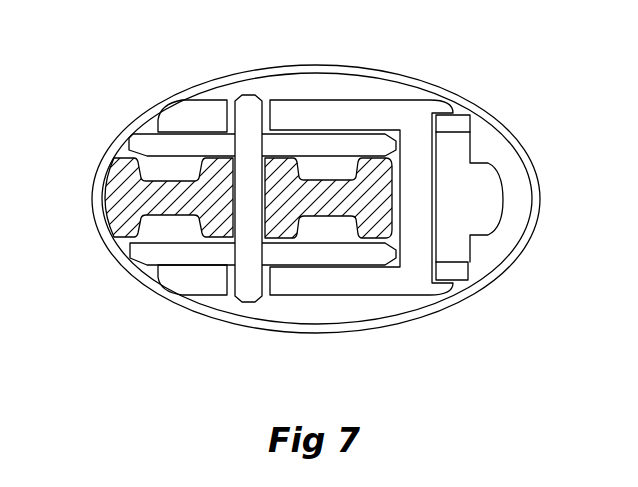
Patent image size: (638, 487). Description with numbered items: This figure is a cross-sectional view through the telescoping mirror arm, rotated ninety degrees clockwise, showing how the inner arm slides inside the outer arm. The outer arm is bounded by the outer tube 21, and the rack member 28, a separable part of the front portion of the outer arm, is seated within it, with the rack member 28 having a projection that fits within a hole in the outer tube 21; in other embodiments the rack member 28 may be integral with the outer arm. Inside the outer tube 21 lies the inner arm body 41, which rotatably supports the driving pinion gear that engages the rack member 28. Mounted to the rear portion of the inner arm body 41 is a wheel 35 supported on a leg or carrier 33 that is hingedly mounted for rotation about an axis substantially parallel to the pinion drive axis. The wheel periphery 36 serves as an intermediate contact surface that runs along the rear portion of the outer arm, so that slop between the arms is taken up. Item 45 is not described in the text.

The outer tube 21 is at (327, 67).
The rack member 28 is at (490, 148).
The leg or carrier 33 is at (322, 252).
The wheel 35 is at (213, 220).
The wheel periphery 36 is at (94, 177).
The inner arm body 41 is at (388, 282).
The engagement tabs 45 is at (440, 142).